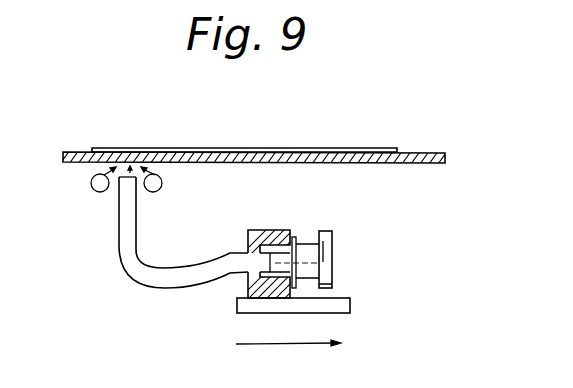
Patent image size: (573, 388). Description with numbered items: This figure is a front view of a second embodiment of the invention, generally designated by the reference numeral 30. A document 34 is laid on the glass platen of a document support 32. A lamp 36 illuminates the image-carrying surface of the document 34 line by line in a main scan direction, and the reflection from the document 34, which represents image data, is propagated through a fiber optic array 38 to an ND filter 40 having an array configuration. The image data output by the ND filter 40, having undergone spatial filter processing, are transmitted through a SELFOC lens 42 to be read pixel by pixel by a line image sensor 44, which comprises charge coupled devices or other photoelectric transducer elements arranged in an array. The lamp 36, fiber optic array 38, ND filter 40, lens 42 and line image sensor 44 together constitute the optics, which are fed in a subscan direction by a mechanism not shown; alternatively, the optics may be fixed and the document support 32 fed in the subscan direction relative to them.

The second embodiment 30 is at (477, 171).
The document support 32 is at (335, 163).
The document 34 is at (273, 148).
The lamp 36 is at (95, 191).
The fiber optic array 38 is at (140, 270).
The ND filter 40 is at (237, 310).
The SELFOC lens 42 is at (285, 268).
The line image sensor 44 is at (332, 258).